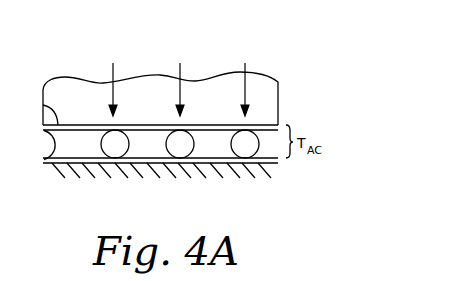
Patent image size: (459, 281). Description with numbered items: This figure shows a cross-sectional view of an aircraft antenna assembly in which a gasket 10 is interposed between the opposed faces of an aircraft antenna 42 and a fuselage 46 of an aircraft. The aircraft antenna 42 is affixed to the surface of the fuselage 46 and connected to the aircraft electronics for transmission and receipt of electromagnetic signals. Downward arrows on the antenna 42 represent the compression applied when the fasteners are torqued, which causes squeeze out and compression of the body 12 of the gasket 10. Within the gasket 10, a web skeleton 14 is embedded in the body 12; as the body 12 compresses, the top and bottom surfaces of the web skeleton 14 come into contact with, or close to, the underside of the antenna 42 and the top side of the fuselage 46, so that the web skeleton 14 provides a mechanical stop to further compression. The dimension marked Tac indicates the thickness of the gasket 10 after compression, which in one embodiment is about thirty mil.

The aircraft antenna 42 is at (272, 80).
The body 12 is at (43, 108).
The web skeleton 14 is at (193, 152).
The gasket 10 is at (83, 151).
The fuselage 46 is at (258, 170).